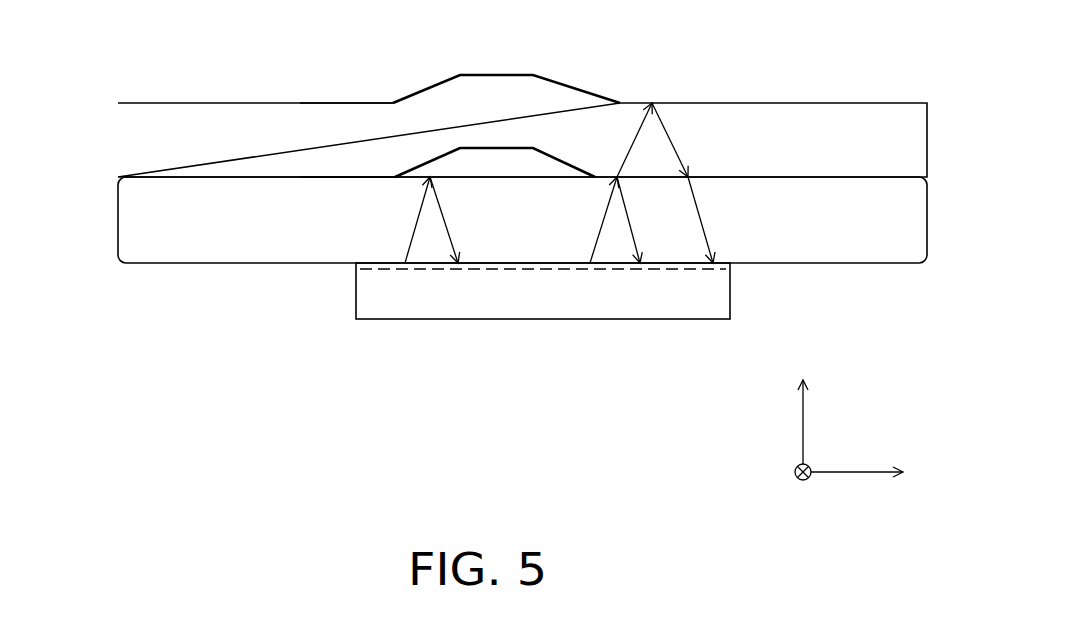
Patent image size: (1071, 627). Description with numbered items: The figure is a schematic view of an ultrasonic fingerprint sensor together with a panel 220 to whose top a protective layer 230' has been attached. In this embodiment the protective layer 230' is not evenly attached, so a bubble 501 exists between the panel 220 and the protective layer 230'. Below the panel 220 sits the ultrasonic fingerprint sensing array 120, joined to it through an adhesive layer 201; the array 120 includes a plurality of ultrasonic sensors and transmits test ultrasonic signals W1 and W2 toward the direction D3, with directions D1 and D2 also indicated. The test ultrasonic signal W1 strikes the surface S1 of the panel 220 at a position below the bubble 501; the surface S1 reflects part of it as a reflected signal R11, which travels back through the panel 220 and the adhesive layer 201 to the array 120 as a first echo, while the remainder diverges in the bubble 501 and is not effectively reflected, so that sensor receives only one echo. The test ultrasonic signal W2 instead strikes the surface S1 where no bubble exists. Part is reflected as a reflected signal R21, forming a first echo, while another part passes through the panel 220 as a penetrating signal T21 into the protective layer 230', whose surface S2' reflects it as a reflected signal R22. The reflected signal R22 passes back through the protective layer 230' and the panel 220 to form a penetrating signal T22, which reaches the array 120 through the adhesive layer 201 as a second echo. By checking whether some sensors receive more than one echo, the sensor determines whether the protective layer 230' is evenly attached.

The bubble 501 is at (458, 167).
The surface of the protective layer S2' is at (221, 107).
The protective layer 230' is at (483, 126).
The surface of the panel S1 is at (163, 178).
The panel 220 is at (125, 242).
The adhesive layer 201 is at (356, 268).
The ultrasonic fingerprint sensing array 120 is at (356, 303).
The test ultrasonic signal W1 is at (412, 228).
The reflected signal R11 is at (443, 222).
The test ultrasonic signal W2 is at (603, 227).
The reflected signal R21 is at (627, 217).
The penetrating signal T21 is at (633, 137).
The reflected signal R22 is at (670, 140).
The penetrating signal T22 is at (702, 215).
The direction D1 is at (872, 472).
The direction D2 is at (787, 479).
The direction D3 is at (806, 405).